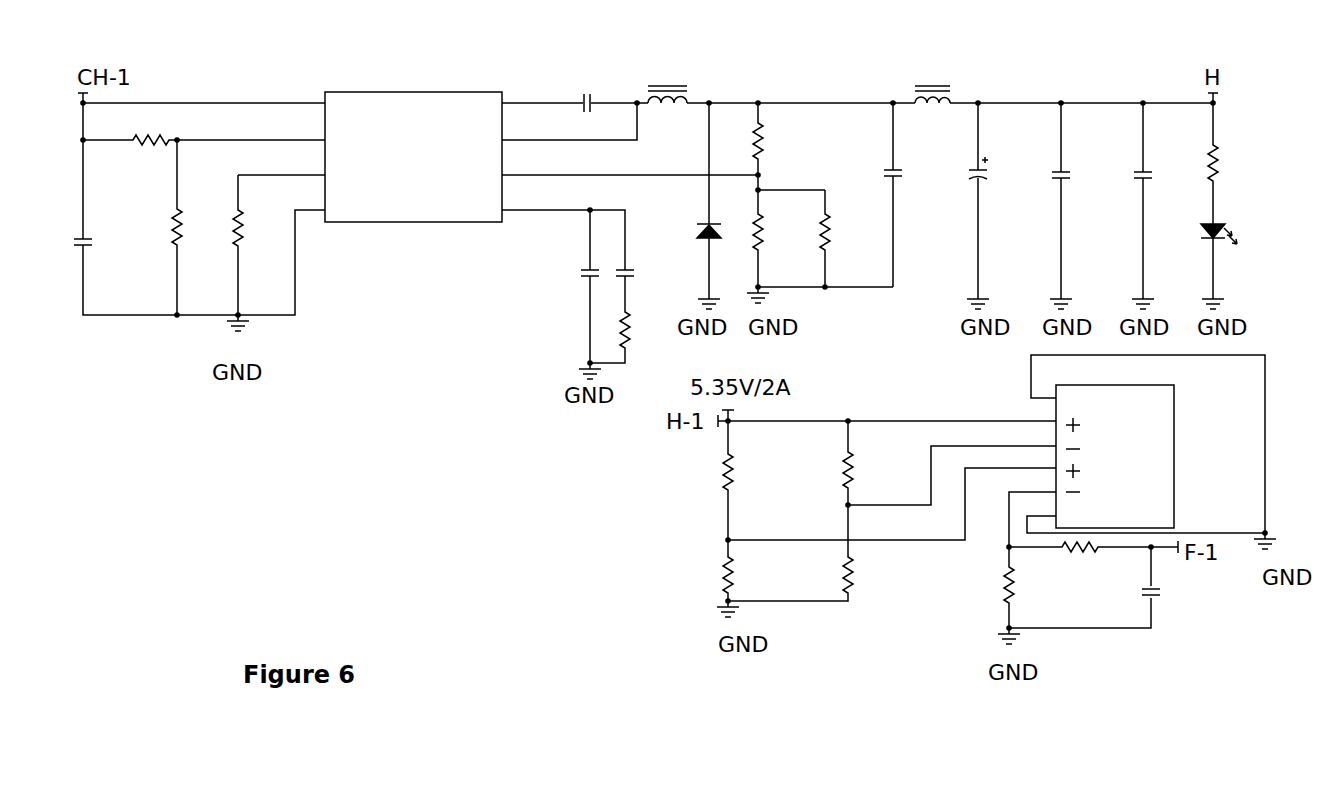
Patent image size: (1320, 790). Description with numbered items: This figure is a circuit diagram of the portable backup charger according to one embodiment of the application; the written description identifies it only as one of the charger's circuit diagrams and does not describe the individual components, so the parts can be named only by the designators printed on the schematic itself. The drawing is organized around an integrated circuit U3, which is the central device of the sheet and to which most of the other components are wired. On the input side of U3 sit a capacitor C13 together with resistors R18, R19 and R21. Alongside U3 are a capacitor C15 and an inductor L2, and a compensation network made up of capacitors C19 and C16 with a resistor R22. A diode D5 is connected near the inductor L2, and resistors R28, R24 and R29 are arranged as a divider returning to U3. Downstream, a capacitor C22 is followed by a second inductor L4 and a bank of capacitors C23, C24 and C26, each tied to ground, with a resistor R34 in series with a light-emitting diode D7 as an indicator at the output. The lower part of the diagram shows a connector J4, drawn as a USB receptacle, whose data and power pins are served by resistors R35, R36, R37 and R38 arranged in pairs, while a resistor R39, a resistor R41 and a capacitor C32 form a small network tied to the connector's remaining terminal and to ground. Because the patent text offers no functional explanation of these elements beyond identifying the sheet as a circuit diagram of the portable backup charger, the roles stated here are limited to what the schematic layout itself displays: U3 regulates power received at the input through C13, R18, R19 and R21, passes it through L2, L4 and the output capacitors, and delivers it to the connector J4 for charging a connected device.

The input capacitor C13 is at (107, 242).
The resistor R18 is at (146, 159).
The resistor R19 is at (199, 232).
The resistor R21 is at (260, 232).
The MP4462 buck converter IC U3 is at (413, 169).
The bootstrap capacitor C15 is at (584, 86).
The inductor L2 is at (667, 80).
The compensation capacitor C19 is at (559, 274).
The compensation capacitor C16 is at (648, 274).
The compensation resistor R22 is at (580, 330).
The freewheeling diode D5 is at (688, 234).
The feedback resistor R28 is at (784, 141).
The feedback resistor R24 is at (781, 232).
The feedback resistor R29 is at (849, 232).
The output capacitor C22 is at (916, 158).
The output filter inductor L4 is at (932, 80).
The output electrolytic capacitor C23 is at (1003, 175).
The output capacitor C24 is at (1084, 180).
The output capacitor C26 is at (1164, 180).
The LED current limiting resistor R34 is at (1243, 163).
The indicator LED D7 is at (1239, 237).
The divider resistor R35 is at (754, 472).
The divider resistor R36 is at (757, 575).
The divider resistor R37 is at (875, 470).
The divider resistor R38 is at (874, 576).
The USB connector J4 is at (1140, 445).
The resistor R39 is at (979, 585).
The resistor R41 is at (1079, 567).
The capacitor C32 is at (1173, 595).